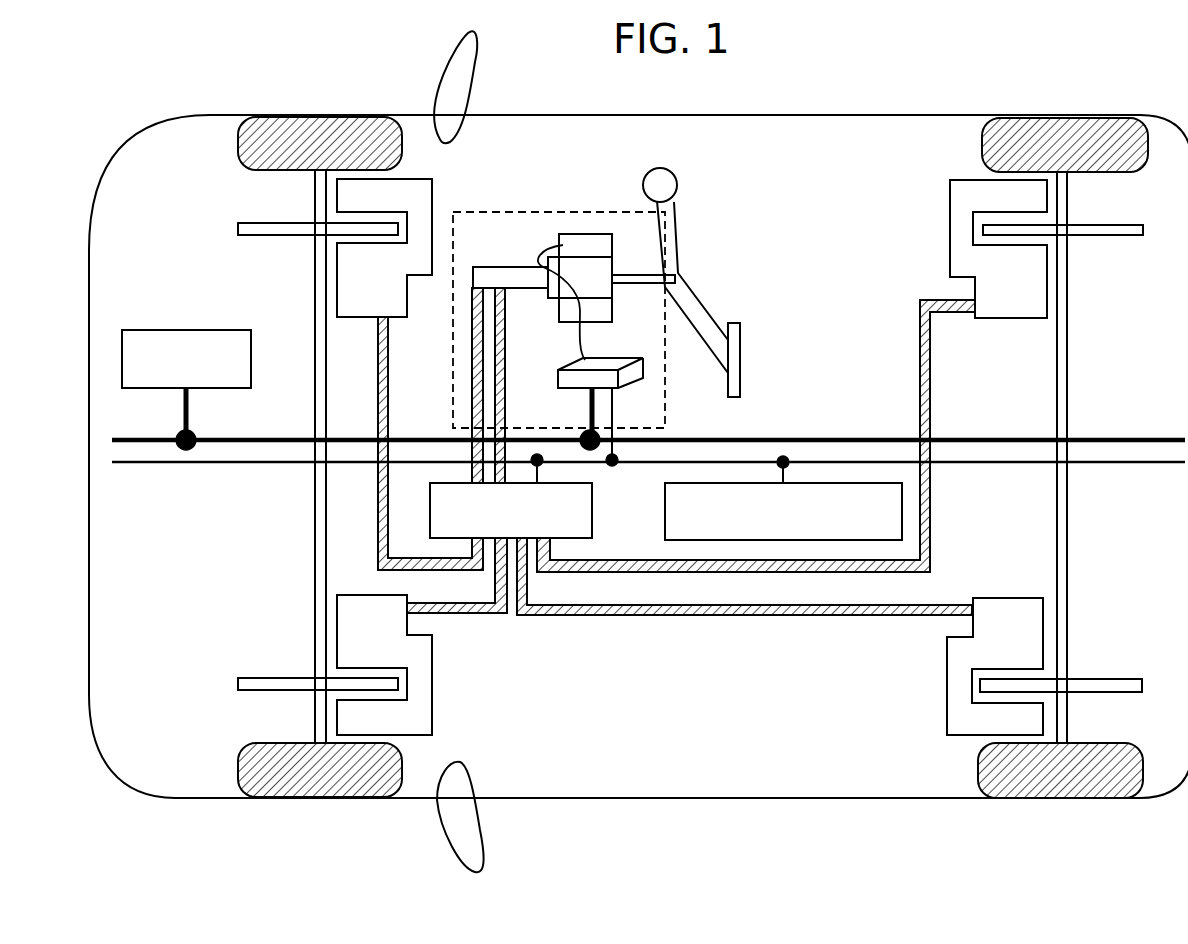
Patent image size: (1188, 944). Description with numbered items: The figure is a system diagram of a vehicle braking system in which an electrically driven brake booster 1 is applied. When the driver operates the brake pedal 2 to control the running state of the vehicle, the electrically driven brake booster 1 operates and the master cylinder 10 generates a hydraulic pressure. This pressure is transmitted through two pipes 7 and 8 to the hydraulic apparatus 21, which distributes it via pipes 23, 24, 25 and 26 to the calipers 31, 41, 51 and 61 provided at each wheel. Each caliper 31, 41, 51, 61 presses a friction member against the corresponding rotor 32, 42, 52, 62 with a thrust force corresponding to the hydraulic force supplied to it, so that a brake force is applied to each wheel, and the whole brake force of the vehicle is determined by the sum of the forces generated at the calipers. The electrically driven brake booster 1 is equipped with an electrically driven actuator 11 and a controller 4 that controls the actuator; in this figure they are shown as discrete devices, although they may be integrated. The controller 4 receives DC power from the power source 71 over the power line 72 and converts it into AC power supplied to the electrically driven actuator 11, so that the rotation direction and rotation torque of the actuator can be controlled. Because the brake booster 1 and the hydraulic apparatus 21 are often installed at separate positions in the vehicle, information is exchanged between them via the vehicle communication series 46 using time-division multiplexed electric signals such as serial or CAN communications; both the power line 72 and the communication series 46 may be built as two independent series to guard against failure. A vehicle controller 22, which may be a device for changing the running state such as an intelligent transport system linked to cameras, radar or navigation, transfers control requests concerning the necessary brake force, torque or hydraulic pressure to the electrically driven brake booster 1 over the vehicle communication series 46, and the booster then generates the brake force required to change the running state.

The electrically driven brake booster 1 is at (549, 210).
The brake pedal 2 is at (688, 303).
The controller 4 is at (563, 378).
The pipe 7 is at (507, 357).
The pipe 8 is at (472, 388).
The master cylinder 10 is at (498, 266).
The electrically driven actuator 11 is at (588, 233).
The hydraulic apparatus 21 is at (593, 491).
The vehicle controller 22 is at (664, 525).
The pipe 23 is at (808, 572).
The pipe 24 is at (404, 557).
The pipe 25 is at (466, 615).
The pipe 26 is at (696, 617).
The caliper 31 is at (950, 193).
The rotor 32 is at (1125, 237).
The caliper 41 is at (432, 180).
The rotor 42 is at (257, 236).
The vehicle communication series 46 is at (975, 464).
The caliper 51 is at (432, 703).
The rotor 52 is at (256, 677).
The caliper 61 is at (1001, 597).
The rotor 62 is at (1113, 678).
The power source 71 is at (186, 329).
The power line 72 is at (990, 438).